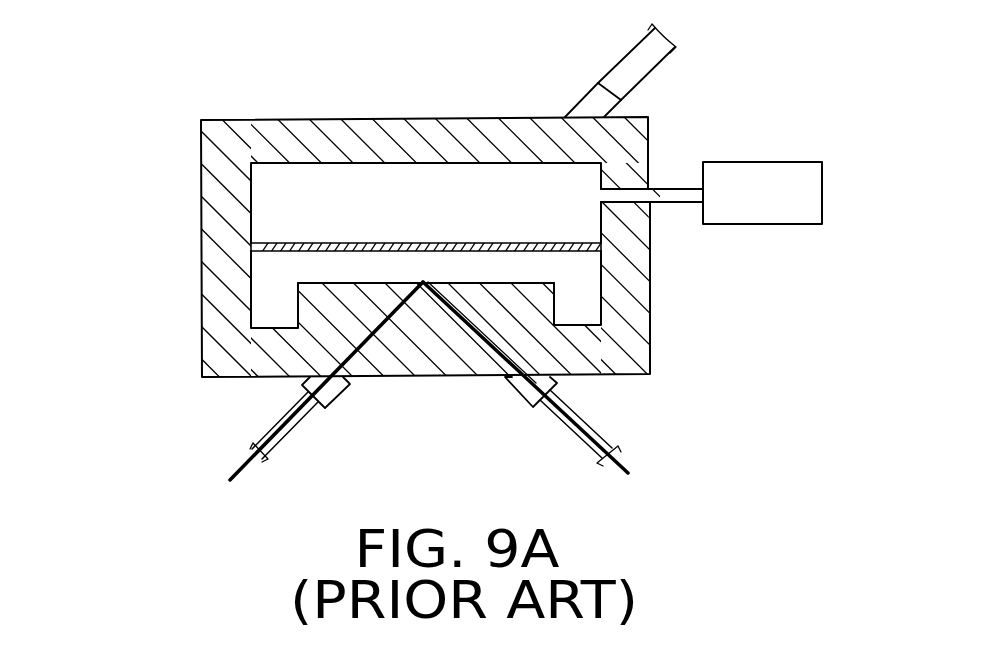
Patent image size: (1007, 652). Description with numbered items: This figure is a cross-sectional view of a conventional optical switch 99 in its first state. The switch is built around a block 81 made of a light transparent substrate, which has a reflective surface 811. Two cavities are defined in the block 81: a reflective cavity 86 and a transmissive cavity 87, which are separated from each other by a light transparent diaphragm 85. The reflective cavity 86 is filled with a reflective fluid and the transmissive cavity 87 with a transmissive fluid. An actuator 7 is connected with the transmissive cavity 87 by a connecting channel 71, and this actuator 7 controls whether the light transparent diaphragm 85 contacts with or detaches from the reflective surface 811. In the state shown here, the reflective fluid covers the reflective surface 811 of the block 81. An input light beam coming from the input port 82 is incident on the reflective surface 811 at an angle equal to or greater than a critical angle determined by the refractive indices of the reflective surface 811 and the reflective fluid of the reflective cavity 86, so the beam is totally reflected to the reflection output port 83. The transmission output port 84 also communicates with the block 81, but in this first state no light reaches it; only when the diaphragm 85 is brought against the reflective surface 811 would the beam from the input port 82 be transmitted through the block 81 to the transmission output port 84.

The optical switch 99 is at (675, 104).
The block 81 is at (247, 137).
The transmissive cavity 87 is at (405, 195).
The light transparent diaphragm 85 is at (502, 280).
The reflective cavity 86 is at (310, 263).
The reflective surface 811 is at (575, 275).
The connecting channel 71 is at (667, 197).
The actuator 7 is at (757, 180).
The transmission output port 84 is at (590, 105).
The input port 82 is at (332, 390).
The reflection output port 83 is at (527, 388).